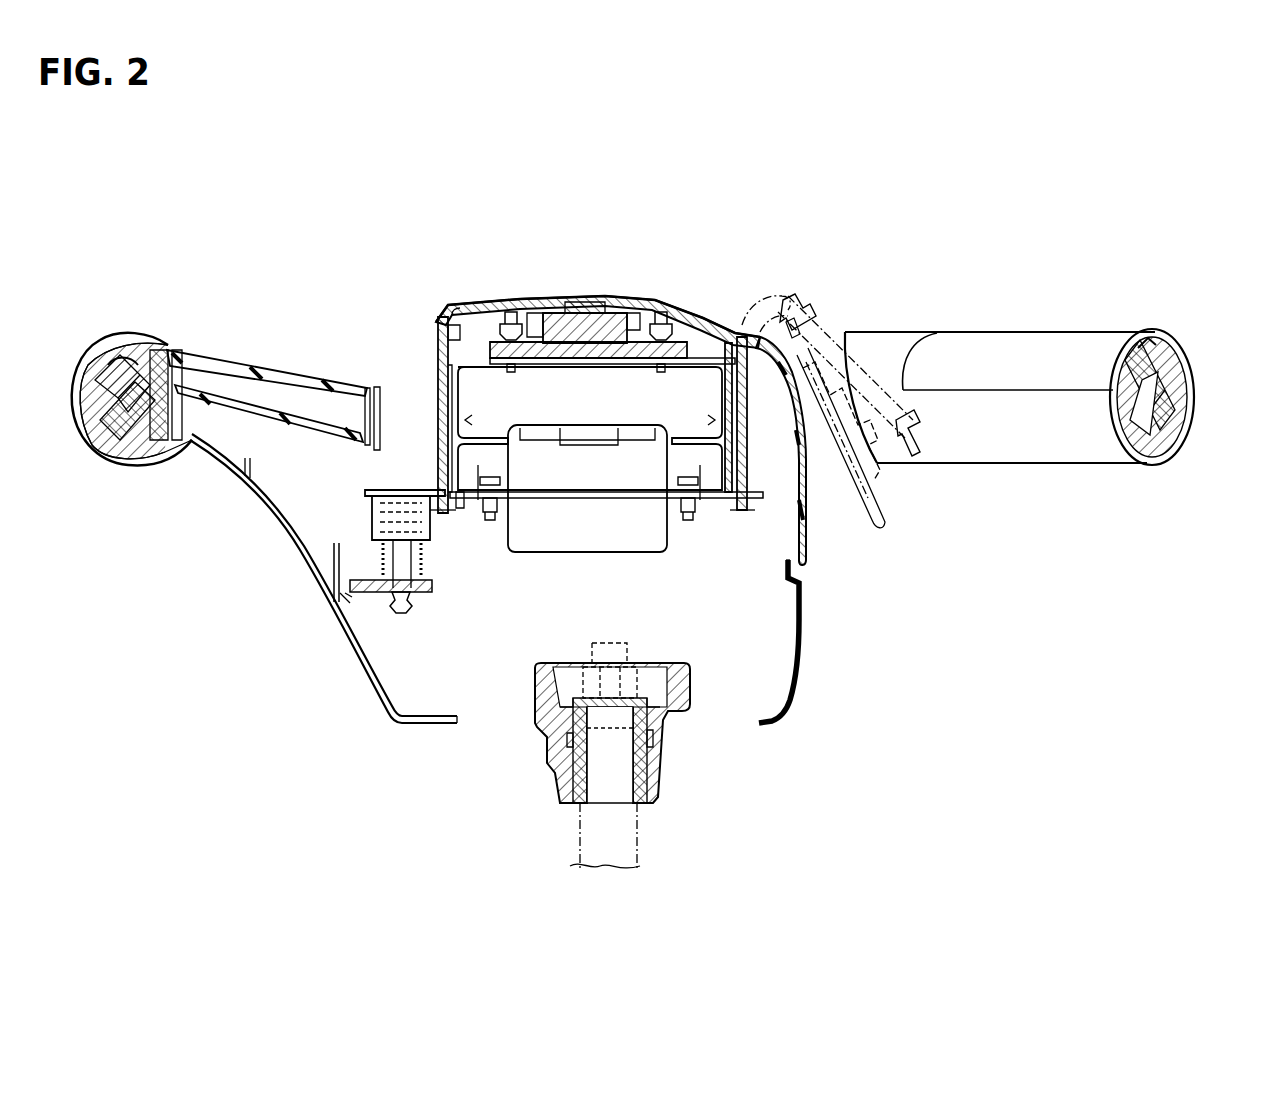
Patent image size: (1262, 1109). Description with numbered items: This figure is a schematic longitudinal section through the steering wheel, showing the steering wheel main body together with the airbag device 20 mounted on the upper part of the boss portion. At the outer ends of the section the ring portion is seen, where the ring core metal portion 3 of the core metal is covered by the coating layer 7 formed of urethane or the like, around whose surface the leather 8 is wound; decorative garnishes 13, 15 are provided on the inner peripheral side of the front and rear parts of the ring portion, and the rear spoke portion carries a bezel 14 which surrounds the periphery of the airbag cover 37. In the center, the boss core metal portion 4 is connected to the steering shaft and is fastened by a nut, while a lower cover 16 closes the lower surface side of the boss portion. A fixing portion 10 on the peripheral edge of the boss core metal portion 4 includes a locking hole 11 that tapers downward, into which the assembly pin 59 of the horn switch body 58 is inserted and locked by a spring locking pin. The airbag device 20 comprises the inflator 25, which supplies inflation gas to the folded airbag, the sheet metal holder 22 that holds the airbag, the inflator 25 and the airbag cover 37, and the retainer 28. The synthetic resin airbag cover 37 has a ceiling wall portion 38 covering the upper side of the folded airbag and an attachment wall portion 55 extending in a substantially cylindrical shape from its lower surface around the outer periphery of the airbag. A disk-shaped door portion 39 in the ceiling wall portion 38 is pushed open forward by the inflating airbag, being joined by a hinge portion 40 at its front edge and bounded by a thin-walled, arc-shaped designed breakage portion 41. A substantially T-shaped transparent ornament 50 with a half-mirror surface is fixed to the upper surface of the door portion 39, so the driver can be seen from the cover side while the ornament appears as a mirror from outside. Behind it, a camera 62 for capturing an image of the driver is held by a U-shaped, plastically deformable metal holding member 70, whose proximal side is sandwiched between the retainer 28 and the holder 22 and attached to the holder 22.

The ring core metal portion 3 is at (1120, 435).
The boss core metal portion 4 is at (653, 767).
The coating layer 7 is at (1160, 432).
The leather 8 is at (1185, 408).
The fixing portion 10 is at (360, 597).
The locking hole 11 is at (388, 595).
The decorative garnish 13 is at (1036, 345).
The bezel 14 is at (232, 355).
The decorative garnish 15 is at (115, 335).
The lower cover 16 is at (320, 593).
The airbag device 20 is at (750, 587).
The holder 22 is at (424, 490).
The inflator 25 is at (584, 540).
The retainer 28 is at (442, 496).
The airbag cover 37 is at (455, 196).
The ceiling wall portion 38 is at (446, 340).
The door portion 39 is at (650, 330).
The hinge portion 40 is at (733, 340).
The designed breakage portion 41 is at (483, 290).
The ornament 50 is at (581, 300).
The attachment wall portion 55 is at (440, 345).
The horn switch body 58 is at (385, 512).
The assembly pin 59 is at (401, 614).
The camera 62 is at (611, 340).
The holding member 70 is at (755, 342).